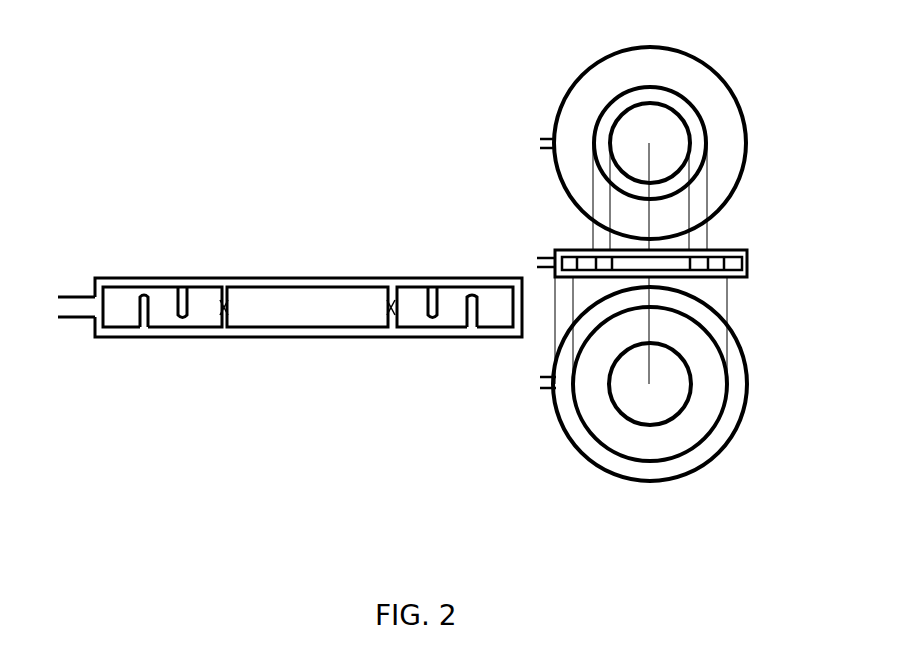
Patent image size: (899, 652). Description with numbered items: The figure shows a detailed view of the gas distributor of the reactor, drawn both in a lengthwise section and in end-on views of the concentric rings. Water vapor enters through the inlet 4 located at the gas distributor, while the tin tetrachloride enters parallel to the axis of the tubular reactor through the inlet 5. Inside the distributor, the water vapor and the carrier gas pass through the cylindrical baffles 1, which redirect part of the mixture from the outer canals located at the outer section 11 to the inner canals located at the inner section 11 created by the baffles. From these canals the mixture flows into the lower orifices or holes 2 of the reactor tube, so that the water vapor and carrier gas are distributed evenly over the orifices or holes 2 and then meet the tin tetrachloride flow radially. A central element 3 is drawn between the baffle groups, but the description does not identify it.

The cylindrical baffles 1 is at (183, 287).
The orifices or holes 2 is at (307, 307).
The central unit 3 is at (307, 307).
The inlet 4 is at (66, 307).
The inlet 5 is at (258, 278).
The outer section and inner section 11 is at (382, 282).